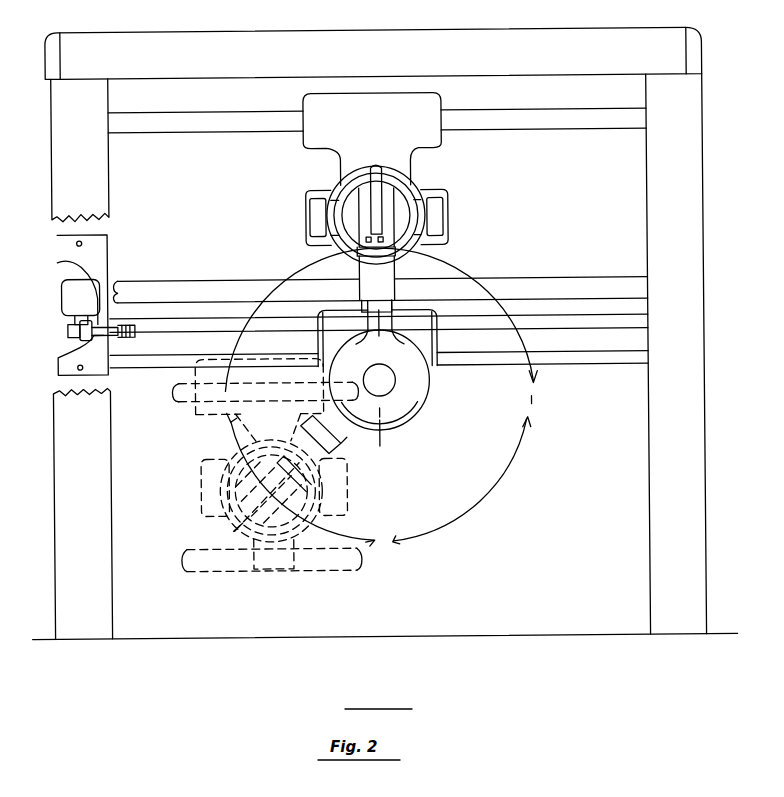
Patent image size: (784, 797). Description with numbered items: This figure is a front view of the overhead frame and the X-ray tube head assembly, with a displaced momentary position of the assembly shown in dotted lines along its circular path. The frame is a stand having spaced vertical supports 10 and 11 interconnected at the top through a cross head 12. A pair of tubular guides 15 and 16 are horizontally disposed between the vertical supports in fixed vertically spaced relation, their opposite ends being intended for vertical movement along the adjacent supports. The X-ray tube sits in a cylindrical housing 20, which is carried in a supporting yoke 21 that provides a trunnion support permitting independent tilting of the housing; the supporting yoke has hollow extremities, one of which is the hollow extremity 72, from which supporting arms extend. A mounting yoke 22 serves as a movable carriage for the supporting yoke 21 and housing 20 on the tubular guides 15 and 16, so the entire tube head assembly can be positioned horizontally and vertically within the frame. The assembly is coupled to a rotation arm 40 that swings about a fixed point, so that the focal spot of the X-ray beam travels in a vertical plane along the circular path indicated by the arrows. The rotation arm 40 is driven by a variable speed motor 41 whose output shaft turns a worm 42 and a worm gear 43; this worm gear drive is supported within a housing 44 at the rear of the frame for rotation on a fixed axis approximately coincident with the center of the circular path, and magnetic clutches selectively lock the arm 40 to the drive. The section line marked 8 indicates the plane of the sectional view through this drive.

The cross head 12 is at (386, 41).
The vertical support 10 is at (54, 178).
The vertical support 11 is at (697, 225).
The tubular guide 15 is at (586, 130).
The tubular guide 16 is at (596, 281).
The mounting yoke 22 is at (372, 138).
The cylindrical housing 20 is at (343, 184).
The supporting yoke 21 is at (428, 192).
The hollow extremity 72 is at (310, 197).
The worm gear 43 is at (446, 200).
The variable speed motor 41 is at (68, 296).
The worm 42 is at (116, 333).
The housing 44 is at (431, 371).
The rotation arm 40 is at (428, 400).
The section line 8- 8 is at (370, 328).